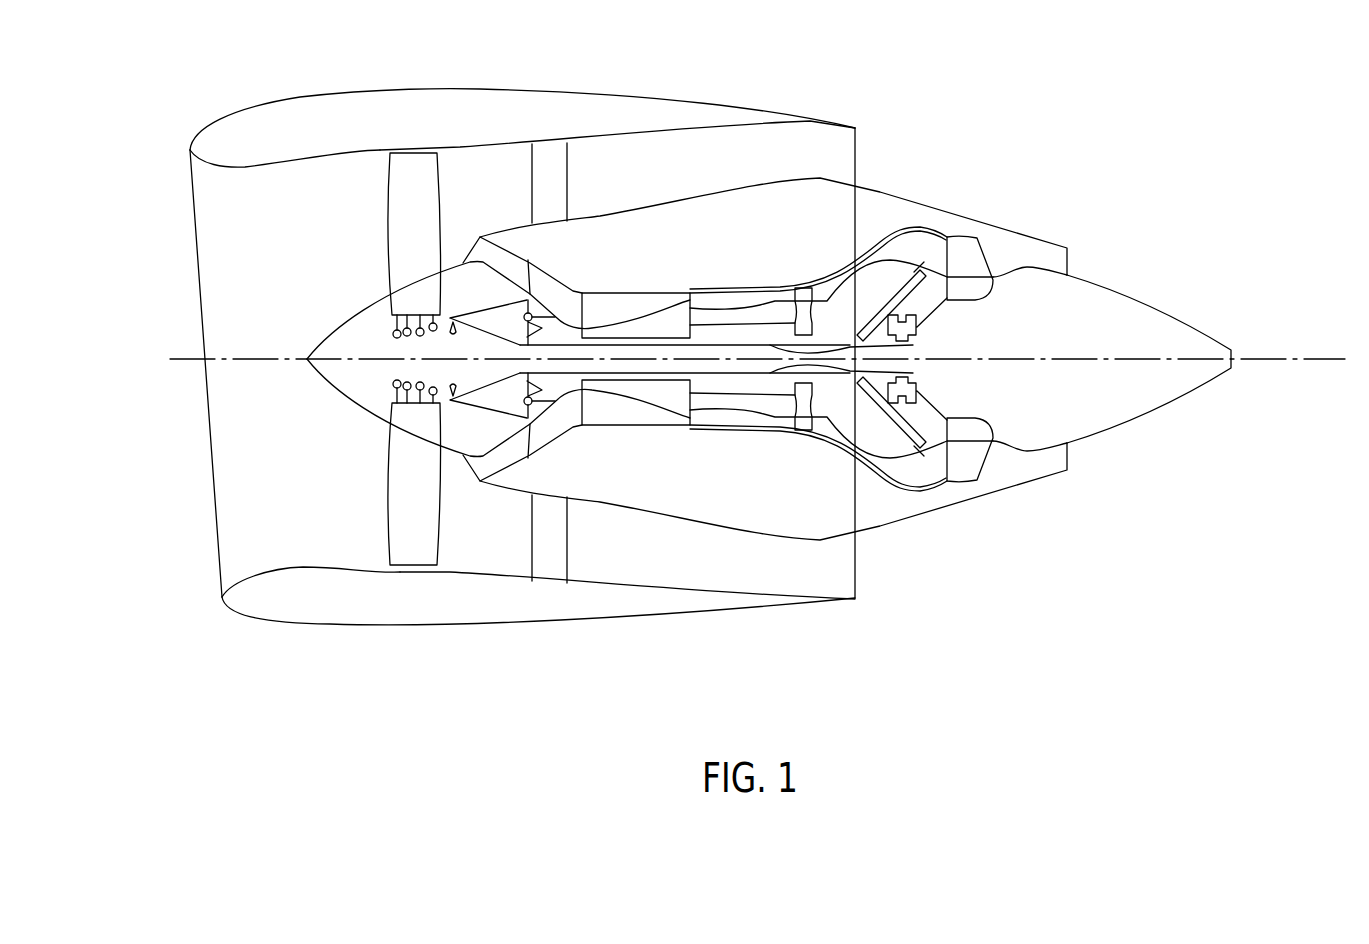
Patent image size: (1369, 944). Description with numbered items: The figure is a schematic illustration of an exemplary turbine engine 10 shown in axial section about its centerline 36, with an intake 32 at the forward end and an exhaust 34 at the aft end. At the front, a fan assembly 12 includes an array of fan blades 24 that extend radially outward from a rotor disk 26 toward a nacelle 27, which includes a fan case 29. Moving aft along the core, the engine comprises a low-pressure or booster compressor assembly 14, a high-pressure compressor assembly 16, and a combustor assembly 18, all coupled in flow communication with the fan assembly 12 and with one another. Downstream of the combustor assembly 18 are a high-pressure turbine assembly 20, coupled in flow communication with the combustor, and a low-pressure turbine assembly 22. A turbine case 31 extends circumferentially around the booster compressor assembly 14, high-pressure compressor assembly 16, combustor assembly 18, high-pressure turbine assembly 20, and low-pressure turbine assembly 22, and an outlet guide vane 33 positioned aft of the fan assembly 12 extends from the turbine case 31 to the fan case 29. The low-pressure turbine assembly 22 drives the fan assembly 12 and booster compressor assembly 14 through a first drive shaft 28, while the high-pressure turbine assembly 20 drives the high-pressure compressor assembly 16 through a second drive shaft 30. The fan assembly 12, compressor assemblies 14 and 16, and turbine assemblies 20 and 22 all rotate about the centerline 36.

The turbine engine 10 is at (995, 70).
The fan assembly 12 is at (380, 230).
The booster compressor assembly 14 is at (475, 227).
The high-pressure compressor assembly 16 is at (628, 289).
The combustor assembly 18 is at (748, 284).
The high-pressure turbine assembly 20 is at (803, 274).
The low-pressure turbine assembly 22 is at (882, 223).
The fan blades 24 is at (428, 240).
The rotor disk 26 is at (377, 350).
The nacelle 27 is at (280, 123).
The first drive shaft 28 is at (563, 345).
The fan case 29 is at (382, 148).
The second drive shaft 30 is at (913, 345).
The turbine case 31 is at (798, 193).
The intake 32 is at (153, 193).
The outlet guide vane 33 is at (550, 167).
The exhaust 34 is at (1081, 259).
The centerline 36 is at (1277, 357).